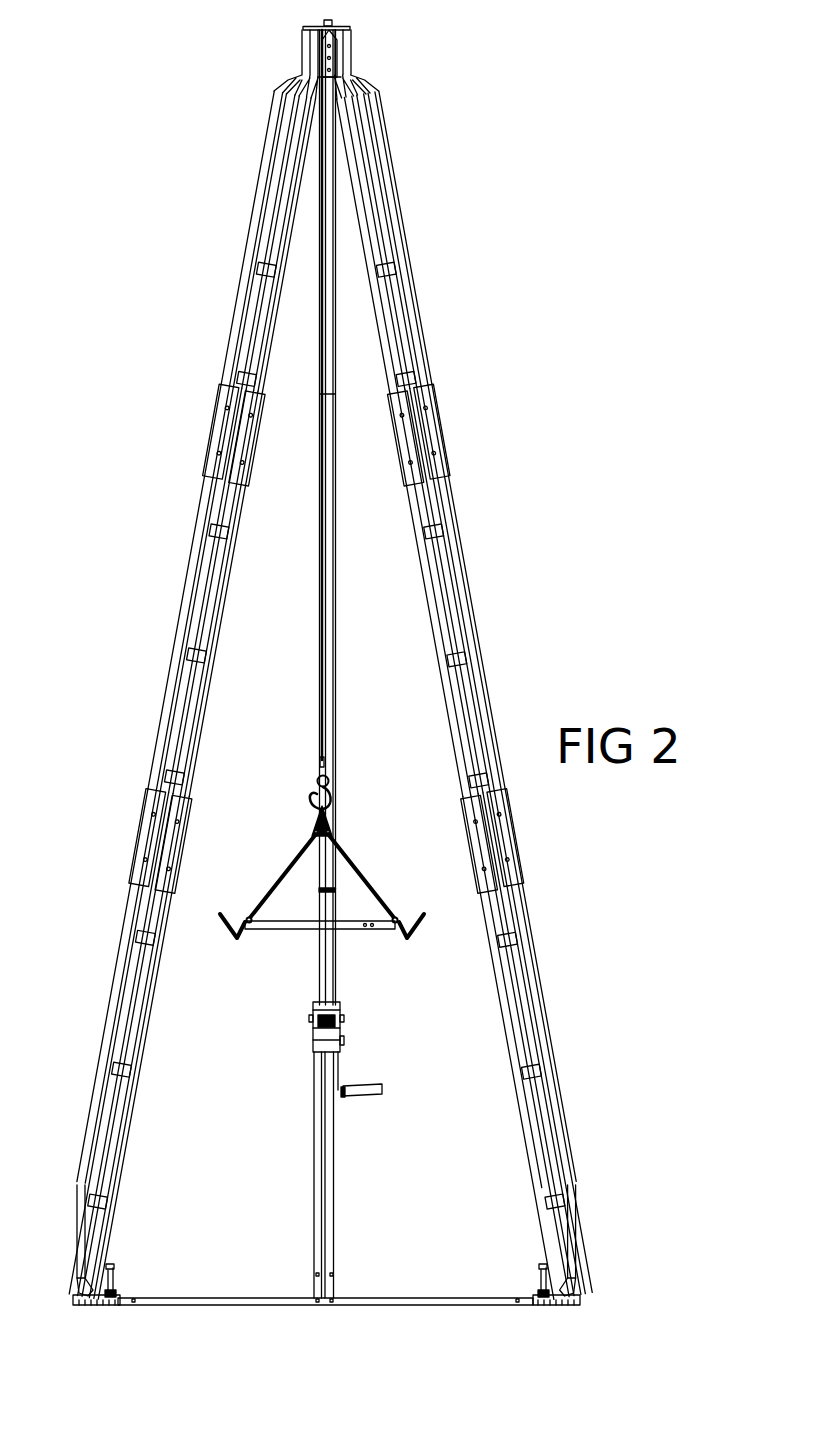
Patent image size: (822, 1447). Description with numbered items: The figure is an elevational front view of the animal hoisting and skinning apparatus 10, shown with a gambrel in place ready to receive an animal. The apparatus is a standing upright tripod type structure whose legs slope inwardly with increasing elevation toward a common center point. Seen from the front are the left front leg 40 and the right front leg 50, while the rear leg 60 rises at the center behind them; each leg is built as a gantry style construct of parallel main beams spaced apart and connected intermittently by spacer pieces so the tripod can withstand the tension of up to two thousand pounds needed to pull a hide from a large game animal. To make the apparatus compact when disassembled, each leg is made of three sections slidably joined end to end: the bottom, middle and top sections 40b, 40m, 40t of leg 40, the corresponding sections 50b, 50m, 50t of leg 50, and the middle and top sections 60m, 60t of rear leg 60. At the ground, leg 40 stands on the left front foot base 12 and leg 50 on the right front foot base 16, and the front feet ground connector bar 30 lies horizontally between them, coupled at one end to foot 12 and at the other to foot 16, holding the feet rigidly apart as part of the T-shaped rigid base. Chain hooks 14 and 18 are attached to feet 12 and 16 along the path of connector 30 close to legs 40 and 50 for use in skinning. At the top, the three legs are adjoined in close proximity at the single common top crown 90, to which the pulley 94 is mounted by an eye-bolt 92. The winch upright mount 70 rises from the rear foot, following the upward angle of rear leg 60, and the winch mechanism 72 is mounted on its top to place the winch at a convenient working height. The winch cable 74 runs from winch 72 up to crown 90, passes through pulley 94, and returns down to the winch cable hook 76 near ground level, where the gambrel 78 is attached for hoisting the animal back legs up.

The skinning apparatus 10 is at (224, 352).
The left front foot base 12 is at (86, 1299).
The chain hook 14 is at (115, 1276).
The right front foot base 16 is at (574, 1299).
The chain hook 18 is at (539, 1278).
The front feet ground connector bar 30 is at (292, 1300).
The left front leg 40 is at (110, 1224).
The top section of leg 40 40t is at (270, 302).
The middle section of leg 40 40m is at (215, 610).
The bottom section of leg 40 40b is at (110, 1034).
The right front leg 50 is at (545, 1242).
The top section of leg 50 50t is at (388, 320).
The middle section of leg 50 50m is at (438, 610).
The bottom section of leg 50 50b is at (512, 1000).
The rear leg 60 is at (321, 973).
The top section of leg 60 60t is at (321, 278).
The middle section of leg 60 60m is at (321, 611).
The winch upright mount 70 is at (317, 1169).
The winch mechanism 72 is at (315, 1034).
The winch cable 74 is at (334, 555).
The winch cable hook 76 is at (322, 773).
The gambrel 78 is at (314, 921).
The top crown 90 is at (327, 27).
The eye-bolt 92 is at (328, 26).
The pulley 94 is at (338, 62).